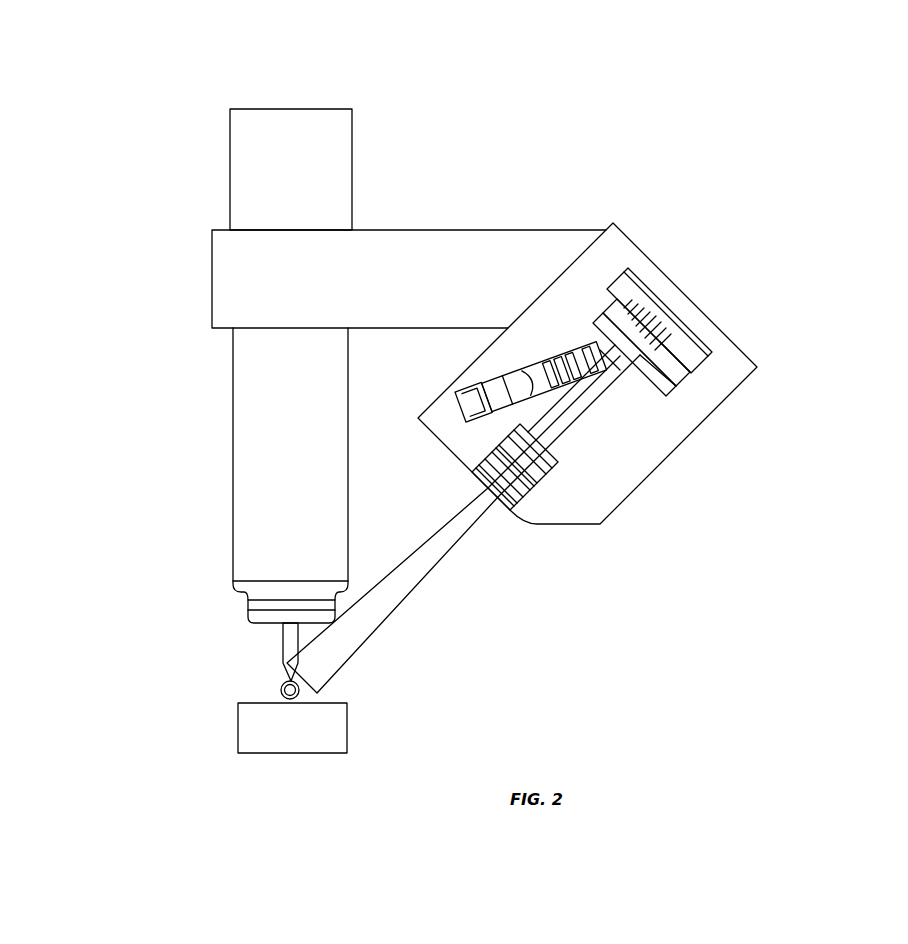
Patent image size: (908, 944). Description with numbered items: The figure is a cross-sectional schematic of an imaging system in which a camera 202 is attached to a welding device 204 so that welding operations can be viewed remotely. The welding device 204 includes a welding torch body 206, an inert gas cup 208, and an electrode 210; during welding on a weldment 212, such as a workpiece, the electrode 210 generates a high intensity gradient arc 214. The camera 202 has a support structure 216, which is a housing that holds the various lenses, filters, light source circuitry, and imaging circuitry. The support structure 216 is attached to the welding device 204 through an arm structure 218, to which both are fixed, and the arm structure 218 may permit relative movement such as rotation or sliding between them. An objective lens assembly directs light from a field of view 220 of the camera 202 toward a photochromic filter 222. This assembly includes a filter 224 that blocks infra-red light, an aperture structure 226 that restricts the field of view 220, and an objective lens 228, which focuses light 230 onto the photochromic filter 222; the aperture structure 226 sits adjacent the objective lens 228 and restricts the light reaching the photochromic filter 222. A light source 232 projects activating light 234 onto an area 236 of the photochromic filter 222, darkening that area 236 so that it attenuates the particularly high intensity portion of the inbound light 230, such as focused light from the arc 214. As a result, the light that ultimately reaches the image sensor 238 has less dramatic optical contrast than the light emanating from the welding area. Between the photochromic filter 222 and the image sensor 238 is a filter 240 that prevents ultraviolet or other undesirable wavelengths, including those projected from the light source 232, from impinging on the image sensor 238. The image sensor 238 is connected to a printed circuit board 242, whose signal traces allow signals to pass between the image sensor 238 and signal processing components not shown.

The camera 202 is at (714, 128).
The welding device 204 is at (300, 90).
The welding torch body 206 is at (290, 183).
The inert gas cup 208 is at (262, 522).
The electrode 210 is at (282, 640).
The weldment 212 is at (292, 711).
The arc 214 is at (281, 689).
The support structure 216 is at (649, 373).
The arm structure 218 is at (262, 281).
The field of view 220 is at (463, 543).
The photochromic filter 222 is at (718, 474).
The filter 224 is at (542, 587).
The aperture structure 226 is at (558, 550).
The objective lens 228 is at (560, 512).
The light 230 is at (645, 448).
The light source 232 is at (480, 286).
The activating light 234 is at (565, 305).
The area 236 is at (646, 282).
The image sensor 238 is at (732, 378).
The filter 240 is at (750, 427).
The printed circuit board 242 is at (702, 285).